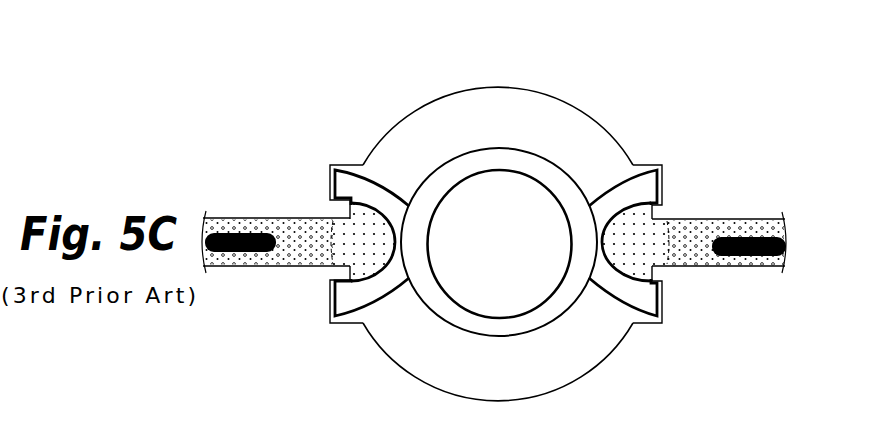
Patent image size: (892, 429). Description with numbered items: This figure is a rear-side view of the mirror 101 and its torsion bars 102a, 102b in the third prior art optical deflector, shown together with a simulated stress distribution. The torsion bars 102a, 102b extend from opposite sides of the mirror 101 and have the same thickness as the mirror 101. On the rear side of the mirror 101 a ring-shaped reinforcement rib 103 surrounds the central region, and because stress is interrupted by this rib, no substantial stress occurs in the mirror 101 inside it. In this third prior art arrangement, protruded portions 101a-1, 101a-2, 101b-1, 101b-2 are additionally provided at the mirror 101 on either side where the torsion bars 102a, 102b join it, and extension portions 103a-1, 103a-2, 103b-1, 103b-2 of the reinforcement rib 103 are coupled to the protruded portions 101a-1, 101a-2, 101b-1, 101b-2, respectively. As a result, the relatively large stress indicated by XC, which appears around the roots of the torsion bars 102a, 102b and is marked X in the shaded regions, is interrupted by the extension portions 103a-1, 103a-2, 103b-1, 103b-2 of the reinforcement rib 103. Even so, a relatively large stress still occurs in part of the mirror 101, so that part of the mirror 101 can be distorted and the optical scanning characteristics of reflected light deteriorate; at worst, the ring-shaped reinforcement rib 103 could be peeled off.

The mirror 101 is at (482, 110).
The ring-shaped reinforcement rib 103 is at (523, 160).
The protruded portion 101a-1 is at (650, 326).
The protruded portion 101a-2 is at (670, 185).
The protruded portion 101b-1 is at (333, 302).
The protruded portion 101b-2 is at (352, 188).
The extension portion 103a-1 is at (638, 305).
The extension portion 103a-2 is at (642, 183).
The extension portion 103b-1 is at (350, 307).
The extension portion 103b-2 is at (345, 186).
The torsion bar 102a is at (758, 227).
The torsion bar 102b is at (290, 238).
The cable core X is at (237, 237).
The relatively large stress XC is at (369, 263).